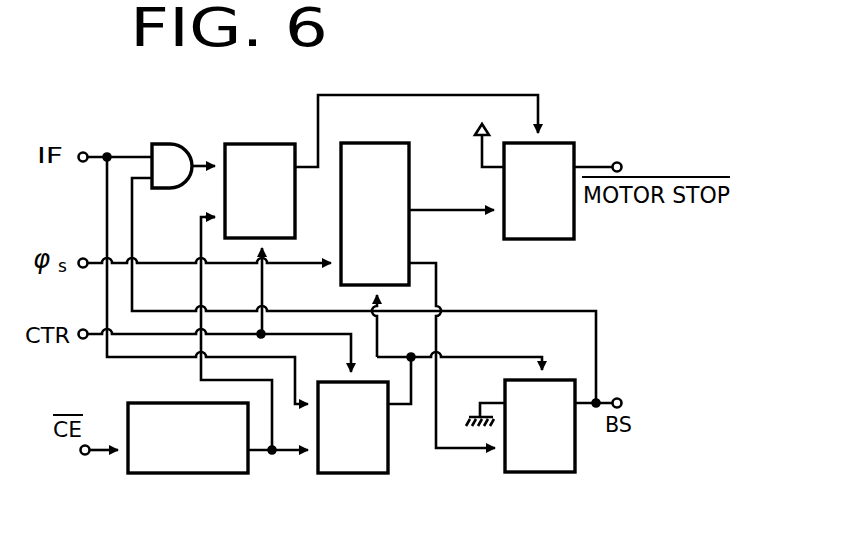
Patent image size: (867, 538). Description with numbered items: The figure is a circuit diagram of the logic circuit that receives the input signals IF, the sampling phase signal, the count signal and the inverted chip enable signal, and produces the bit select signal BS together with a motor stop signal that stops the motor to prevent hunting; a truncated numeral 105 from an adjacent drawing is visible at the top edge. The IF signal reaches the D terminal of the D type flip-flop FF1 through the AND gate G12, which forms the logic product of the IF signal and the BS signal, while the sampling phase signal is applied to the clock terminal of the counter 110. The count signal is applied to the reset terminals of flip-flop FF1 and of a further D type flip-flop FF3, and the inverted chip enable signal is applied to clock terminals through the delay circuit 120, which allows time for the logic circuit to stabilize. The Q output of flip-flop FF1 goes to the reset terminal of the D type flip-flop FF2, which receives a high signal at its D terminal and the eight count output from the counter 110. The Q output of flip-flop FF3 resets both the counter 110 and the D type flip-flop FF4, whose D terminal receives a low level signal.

The counter 110 is at (388, 145).
The delay circuit 120 is at (180, 475).
The partially visible numeral from adjacent figure 105 is at (476, 5).
The AND gate G12 is at (168, 143).
The D type flip-flop FF1 is at (260, 143).
The D type flip-flop FF2 is at (567, 143).
The D type flip-flop FF3 is at (355, 475).
The D type flip-flop FF4 is at (540, 473).